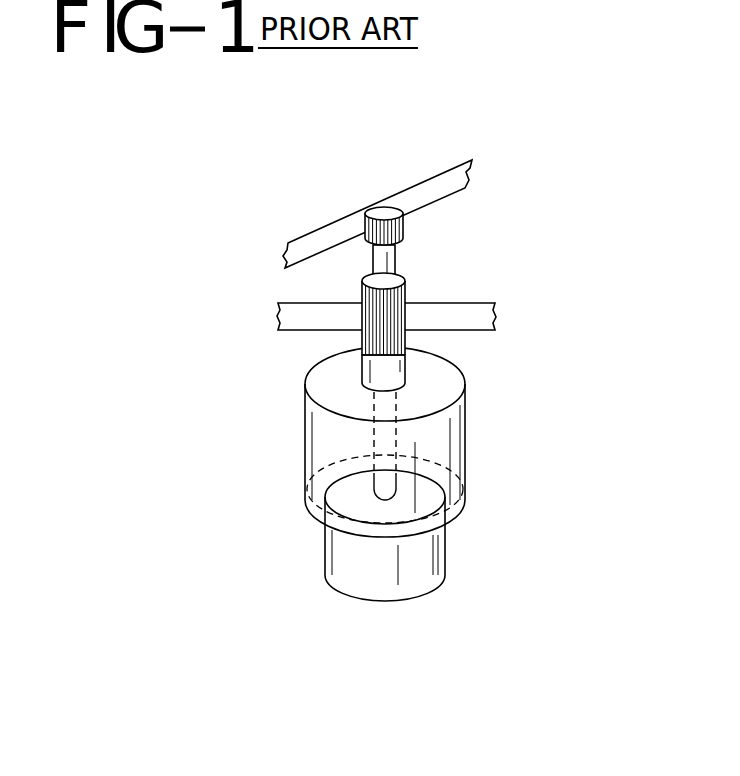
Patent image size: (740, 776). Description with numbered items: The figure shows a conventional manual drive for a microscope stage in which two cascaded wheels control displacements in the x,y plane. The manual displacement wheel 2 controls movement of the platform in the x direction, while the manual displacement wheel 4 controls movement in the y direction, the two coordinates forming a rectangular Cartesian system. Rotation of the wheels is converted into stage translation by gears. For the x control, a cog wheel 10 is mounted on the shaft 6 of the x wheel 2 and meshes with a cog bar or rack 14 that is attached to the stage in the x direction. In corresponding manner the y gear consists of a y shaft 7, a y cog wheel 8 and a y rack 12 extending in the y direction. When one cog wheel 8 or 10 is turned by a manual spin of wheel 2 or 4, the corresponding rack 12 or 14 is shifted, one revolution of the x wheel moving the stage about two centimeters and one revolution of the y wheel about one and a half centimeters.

The manual displacement wheel 2 is at (422, 558).
The manual displacement wheel 4 is at (449, 437).
The shaft 6 is at (387, 263).
The y shaft 7 is at (400, 372).
The y cog wheel 8 is at (363, 285).
The cog wheel 10 is at (402, 222).
The y rack 12 is at (292, 320).
The cog bar or rack 14 is at (307, 248).